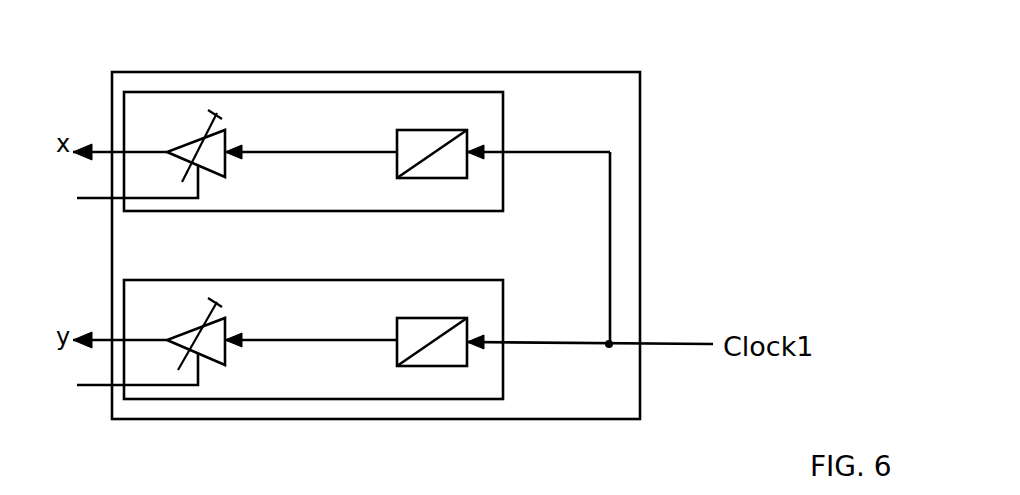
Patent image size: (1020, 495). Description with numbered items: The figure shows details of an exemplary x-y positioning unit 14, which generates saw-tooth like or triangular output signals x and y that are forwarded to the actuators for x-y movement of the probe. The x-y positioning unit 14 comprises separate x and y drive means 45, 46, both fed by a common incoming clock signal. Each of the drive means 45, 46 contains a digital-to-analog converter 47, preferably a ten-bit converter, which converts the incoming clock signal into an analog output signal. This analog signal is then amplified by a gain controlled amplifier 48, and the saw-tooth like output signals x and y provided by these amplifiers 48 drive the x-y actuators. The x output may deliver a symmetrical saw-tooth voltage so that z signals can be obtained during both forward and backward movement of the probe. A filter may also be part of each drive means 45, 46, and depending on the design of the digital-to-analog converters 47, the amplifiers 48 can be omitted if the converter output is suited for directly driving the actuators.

The x-y positioning unit 14 is at (602, 83).
The x drive means 45 is at (497, 142).
The y drive means 46 is at (493, 292).
The digital-to-analog converter 47 is at (427, 137).
The gain controlled amplifier 48 is at (223, 130).